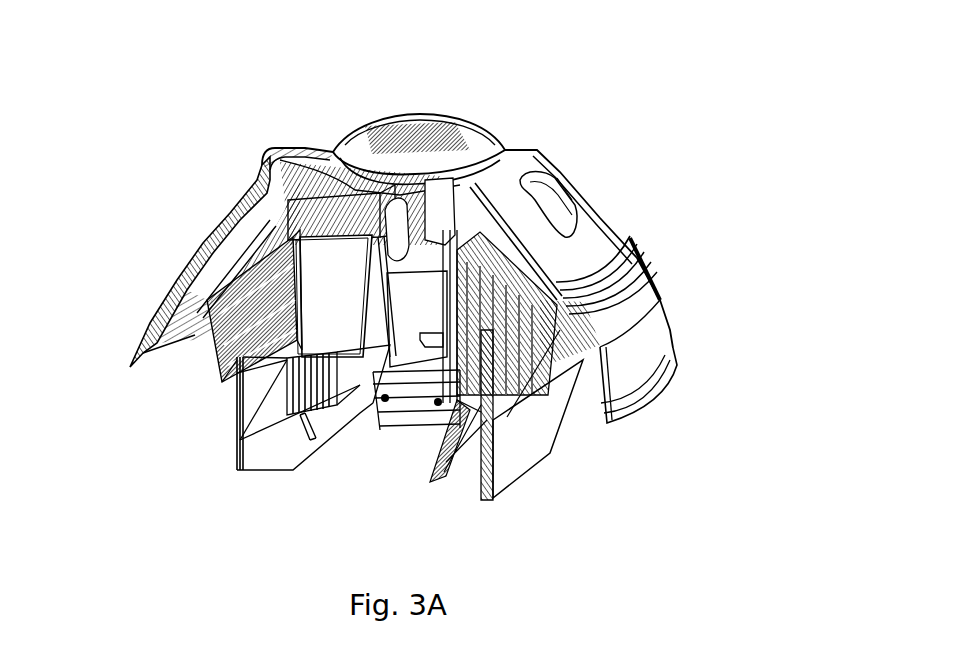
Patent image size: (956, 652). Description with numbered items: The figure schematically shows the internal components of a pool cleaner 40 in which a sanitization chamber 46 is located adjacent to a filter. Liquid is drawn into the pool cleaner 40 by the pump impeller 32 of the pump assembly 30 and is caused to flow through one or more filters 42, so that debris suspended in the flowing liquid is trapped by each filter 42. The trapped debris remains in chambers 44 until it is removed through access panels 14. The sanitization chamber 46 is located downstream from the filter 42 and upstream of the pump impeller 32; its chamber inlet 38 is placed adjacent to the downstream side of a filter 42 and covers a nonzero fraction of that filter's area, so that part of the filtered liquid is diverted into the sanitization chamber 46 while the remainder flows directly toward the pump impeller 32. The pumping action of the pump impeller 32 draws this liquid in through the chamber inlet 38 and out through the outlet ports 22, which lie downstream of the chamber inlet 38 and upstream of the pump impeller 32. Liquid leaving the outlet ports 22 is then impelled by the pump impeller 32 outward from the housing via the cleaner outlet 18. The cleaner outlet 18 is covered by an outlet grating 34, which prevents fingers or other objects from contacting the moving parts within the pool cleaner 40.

The access panel 14 is at (153, 323).
The cleaner outlet 18 is at (378, 132).
The outlet port 22 is at (367, 228).
The pump assembly 30 is at (410, 360).
The pump impeller 32 is at (375, 200).
The outlet grating 34 is at (428, 132).
The chamber inlet 38 is at (235, 377).
The pool cleaner 40 is at (140, 100).
The filter 42 is at (220, 350).
The chamber 44 is at (193, 437).
The sanitization chamber 46 is at (300, 347).